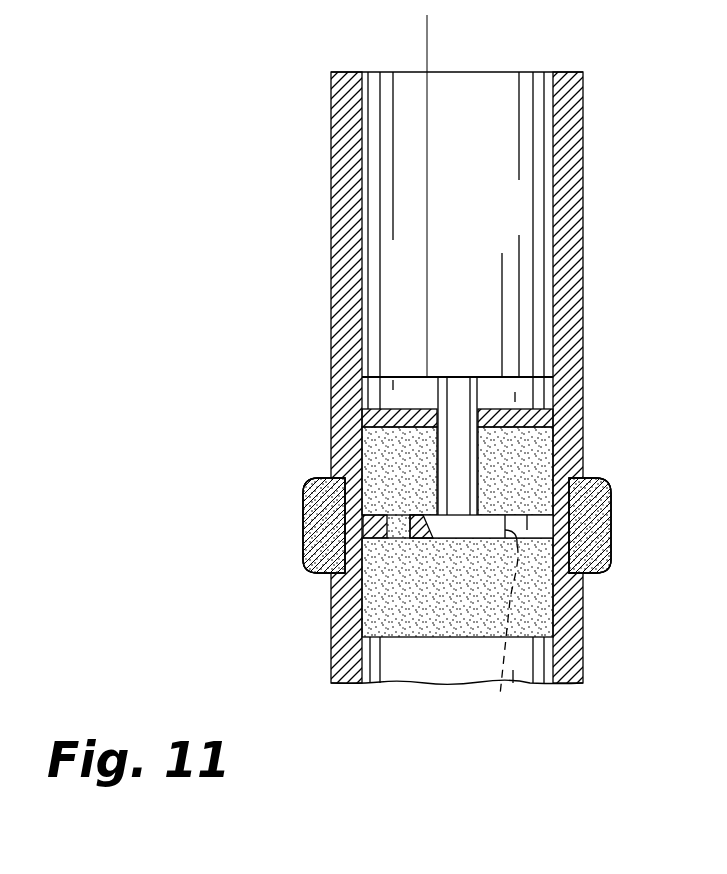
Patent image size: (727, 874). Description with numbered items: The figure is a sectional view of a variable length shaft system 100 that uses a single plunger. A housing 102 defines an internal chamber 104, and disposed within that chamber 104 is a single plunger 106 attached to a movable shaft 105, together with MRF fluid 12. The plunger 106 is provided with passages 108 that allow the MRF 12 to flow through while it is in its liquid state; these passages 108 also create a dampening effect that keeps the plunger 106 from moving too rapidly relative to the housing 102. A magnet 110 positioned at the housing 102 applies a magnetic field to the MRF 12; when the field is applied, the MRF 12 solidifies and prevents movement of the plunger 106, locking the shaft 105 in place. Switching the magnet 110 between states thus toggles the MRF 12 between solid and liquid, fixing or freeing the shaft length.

The variable length shaft system 100 is at (280, 152).
The housing 102 is at (347, 450).
The internal chamber 104 is at (387, 582).
The movable shaft 105 is at (407, 280).
The plunger 106 is at (438, 523).
The passages 108 is at (408, 532).
The magnet 110 is at (318, 531).
The MRF fluid 12 is at (405, 610).